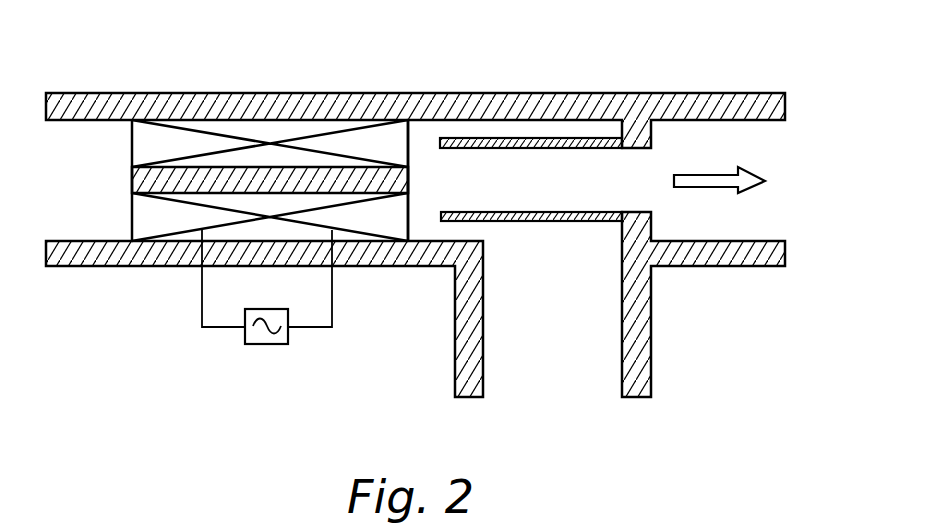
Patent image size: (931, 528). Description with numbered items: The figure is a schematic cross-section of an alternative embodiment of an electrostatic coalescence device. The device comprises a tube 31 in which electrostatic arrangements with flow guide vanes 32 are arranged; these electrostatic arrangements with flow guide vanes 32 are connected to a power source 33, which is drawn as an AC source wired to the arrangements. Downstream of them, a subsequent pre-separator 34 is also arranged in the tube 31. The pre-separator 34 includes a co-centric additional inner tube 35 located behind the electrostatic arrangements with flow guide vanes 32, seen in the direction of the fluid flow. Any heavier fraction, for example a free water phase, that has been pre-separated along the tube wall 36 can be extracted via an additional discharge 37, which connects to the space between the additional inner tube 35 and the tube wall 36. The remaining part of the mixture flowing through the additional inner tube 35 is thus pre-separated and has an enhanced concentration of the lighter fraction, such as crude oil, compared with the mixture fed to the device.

The tube 31 is at (88, 105).
The electrostatic arrangements with flow guide vanes 32 is at (218, 132).
The power source 33 is at (268, 338).
The pre-separator 34 is at (494, 74).
The additional inner tube 35 is at (508, 148).
The tube wall 36 is at (422, 120).
The additional discharge 37 is at (554, 372).